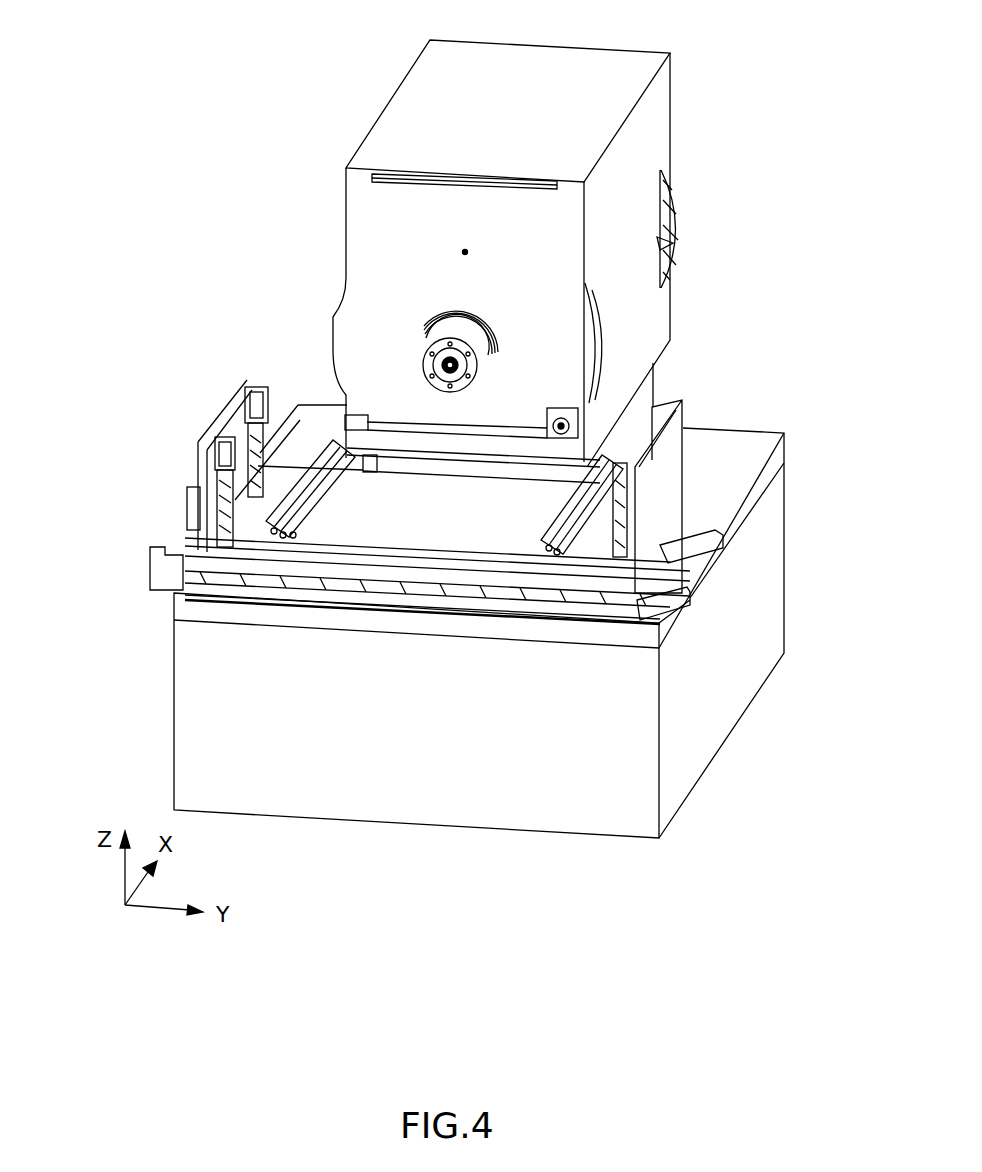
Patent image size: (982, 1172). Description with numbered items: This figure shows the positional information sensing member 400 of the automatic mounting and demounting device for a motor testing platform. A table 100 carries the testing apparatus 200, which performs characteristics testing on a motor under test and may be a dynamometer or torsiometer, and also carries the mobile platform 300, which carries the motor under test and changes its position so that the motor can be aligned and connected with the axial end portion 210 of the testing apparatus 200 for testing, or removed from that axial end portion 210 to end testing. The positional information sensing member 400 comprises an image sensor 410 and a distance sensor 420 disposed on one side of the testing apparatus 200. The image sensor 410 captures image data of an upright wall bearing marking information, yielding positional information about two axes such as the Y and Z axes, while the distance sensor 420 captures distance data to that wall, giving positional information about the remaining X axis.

The table 100 is at (507, 805).
The testing apparatus 200 is at (410, 127).
The axial end portion 210 is at (398, 332).
The mobile platform 300 is at (158, 468).
The positional information sensing member 400 is at (351, 324).
The image sensor 410 is at (547, 425).
The distance sensor 420 is at (337, 400).